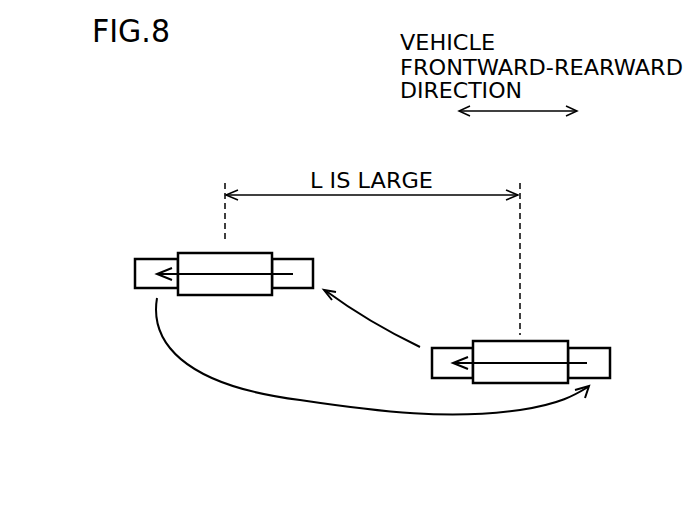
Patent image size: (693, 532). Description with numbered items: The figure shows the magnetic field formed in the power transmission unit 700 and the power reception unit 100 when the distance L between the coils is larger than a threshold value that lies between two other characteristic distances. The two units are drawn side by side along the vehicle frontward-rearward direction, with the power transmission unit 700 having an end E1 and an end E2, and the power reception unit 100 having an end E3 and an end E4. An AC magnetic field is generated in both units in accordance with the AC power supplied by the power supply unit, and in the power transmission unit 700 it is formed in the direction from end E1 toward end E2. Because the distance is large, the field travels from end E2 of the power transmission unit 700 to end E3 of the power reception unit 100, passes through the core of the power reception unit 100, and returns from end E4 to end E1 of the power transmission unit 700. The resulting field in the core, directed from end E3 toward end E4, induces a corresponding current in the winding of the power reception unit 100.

The power reception unit 100 is at (227, 229).
The power transmission unit 700 is at (528, 321).
The end E1 is at (569, 312).
The end E2 is at (449, 347).
The end E3 is at (300, 258).
The end E4 is at (152, 258).